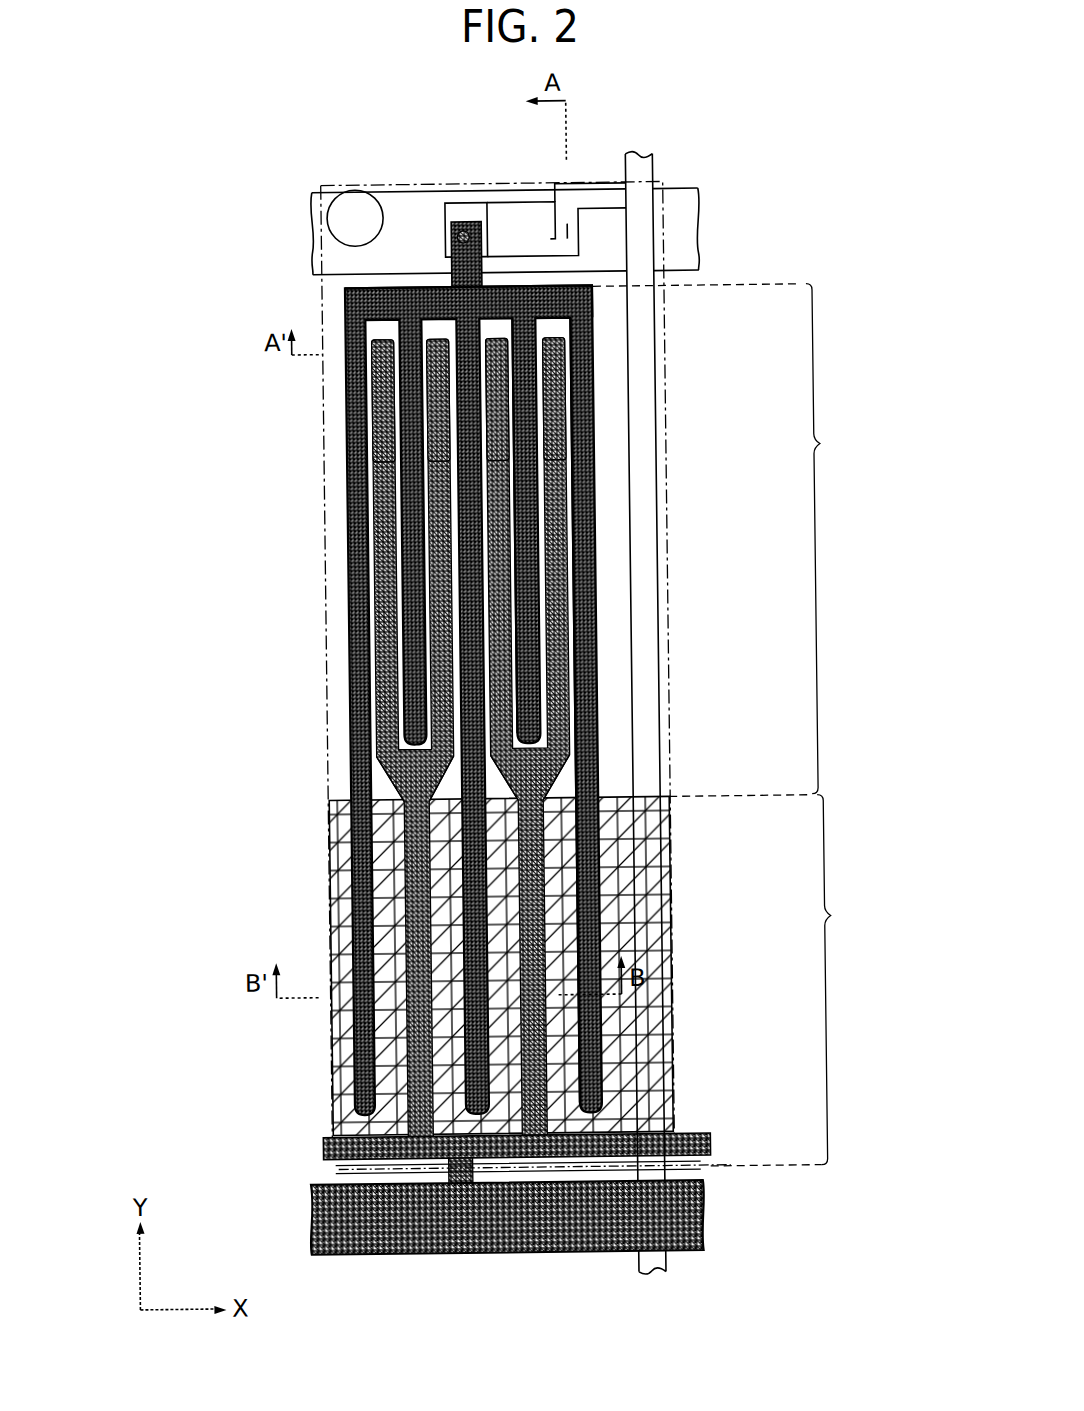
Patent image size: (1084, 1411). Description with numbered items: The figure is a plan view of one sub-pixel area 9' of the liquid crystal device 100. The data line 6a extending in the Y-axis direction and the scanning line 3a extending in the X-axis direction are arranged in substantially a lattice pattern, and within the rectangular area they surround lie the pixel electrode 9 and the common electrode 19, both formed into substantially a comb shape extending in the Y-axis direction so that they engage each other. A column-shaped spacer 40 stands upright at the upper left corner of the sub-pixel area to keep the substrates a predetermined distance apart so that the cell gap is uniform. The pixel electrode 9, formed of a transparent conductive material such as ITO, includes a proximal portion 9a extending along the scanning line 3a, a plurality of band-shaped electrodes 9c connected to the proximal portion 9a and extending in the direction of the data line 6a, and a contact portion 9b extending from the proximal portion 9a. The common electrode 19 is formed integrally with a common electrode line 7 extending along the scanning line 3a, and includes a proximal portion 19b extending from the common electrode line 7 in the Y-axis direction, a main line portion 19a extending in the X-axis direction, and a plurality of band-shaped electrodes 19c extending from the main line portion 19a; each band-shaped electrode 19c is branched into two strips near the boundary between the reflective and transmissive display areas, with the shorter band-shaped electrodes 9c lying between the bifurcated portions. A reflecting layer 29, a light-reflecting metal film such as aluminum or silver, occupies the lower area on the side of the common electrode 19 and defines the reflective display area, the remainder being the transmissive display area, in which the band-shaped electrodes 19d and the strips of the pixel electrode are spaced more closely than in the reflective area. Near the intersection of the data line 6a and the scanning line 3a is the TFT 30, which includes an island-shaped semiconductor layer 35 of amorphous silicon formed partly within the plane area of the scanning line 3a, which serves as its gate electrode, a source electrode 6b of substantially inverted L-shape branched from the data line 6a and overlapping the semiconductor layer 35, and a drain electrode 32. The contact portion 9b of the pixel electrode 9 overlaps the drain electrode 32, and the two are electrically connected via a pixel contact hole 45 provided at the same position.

The liquid crystal device 100 is at (771, 190).
The TFT 30 is at (516, 190).
The drain electrode 32 is at (468, 203).
The semiconductor layer 35 is at (534, 200).
The column-shaped spacer 40 is at (334, 214).
The pixel contact hole 45 is at (463, 240).
The scanning line 3a is at (688, 224).
The data line 6a is at (644, 358).
The source electrode 6b is at (603, 187).
The pixel electrode 9 is at (405, 700).
The proximal portion 9a is at (598, 298).
The contact portion 9b is at (458, 265).
The band-shaped electrodes 9c is at (526, 494).
The sub-pixel area 9' is at (724, 409).
The common electrode 19 is at (578, 653).
The main line portion 19a is at (700, 1147).
The proximal portion 19b is at (339, 1170).
The band-shaped electrodes 19c is at (441, 464).
The band-shaped electrodes 19d is at (409, 768).
The reflecting layer 29 is at (335, 930).
The common electrode line 7 is at (694, 1217).